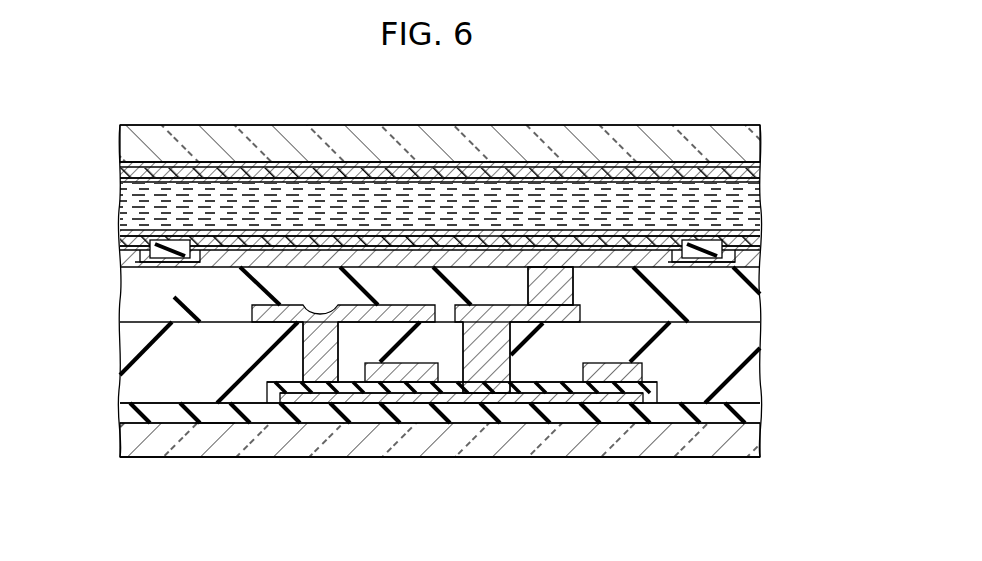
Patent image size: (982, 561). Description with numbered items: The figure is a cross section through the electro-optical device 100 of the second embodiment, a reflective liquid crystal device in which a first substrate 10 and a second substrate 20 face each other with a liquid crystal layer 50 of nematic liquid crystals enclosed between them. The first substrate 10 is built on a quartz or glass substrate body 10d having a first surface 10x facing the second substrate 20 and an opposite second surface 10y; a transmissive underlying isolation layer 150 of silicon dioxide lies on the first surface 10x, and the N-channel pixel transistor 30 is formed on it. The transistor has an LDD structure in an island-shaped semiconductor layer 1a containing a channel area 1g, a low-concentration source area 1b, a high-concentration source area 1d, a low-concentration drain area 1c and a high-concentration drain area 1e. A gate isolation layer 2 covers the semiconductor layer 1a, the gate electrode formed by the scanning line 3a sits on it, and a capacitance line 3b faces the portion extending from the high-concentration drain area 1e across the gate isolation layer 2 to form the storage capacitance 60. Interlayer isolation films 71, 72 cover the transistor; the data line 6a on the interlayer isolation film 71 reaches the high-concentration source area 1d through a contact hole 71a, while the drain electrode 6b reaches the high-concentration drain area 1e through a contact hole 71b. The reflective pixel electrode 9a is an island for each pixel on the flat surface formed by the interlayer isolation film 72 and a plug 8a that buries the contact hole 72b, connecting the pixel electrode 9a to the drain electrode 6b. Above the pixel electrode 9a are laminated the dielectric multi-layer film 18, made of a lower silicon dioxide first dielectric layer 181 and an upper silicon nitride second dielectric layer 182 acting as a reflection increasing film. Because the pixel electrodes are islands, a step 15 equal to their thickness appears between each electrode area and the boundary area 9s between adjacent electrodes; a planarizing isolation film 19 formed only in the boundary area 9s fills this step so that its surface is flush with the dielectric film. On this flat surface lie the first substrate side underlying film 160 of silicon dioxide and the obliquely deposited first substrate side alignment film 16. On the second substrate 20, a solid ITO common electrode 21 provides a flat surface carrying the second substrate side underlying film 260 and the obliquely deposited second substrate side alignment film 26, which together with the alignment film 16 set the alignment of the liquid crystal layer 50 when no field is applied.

The electro-optical device 100 is at (588, 104).
The second substrate 20 is at (102, 125).
The common electrode 21 is at (760, 170).
The second substrate side alignment film 26 is at (660, 172).
The second substrate side underlying film 260 is at (708, 177).
The liquid crystal layer 50 is at (760, 200).
The first substrate side alignment film 16 is at (760, 232).
The first substrate side underlying film 160 is at (760, 238).
The dielectric multi-layer film 18 is at (558, 93).
The first dielectric layer 181 is at (489, 243).
The second dielectric layer 182 is at (542, 243).
The pixel electrode 9a is at (385, 257).
The step 15 is at (170, 240).
The planarizing isolation film 19 is at (175, 247).
The boundary area 9s is at (200, 268).
The first substrate 10 is at (102, 457).
The interlayer isolation film 72 is at (745, 300).
The interlayer isolation film 71 is at (745, 340).
The data line 6a is at (254, 305).
The contact hole 71a is at (305, 350).
The drain electrode 6b is at (581, 316).
The contact hole 71b is at (508, 355).
The plug 8a is at (574, 295).
The contact hole 72b is at (526, 287).
The gate isolation layer 2 is at (421, 364).
The scanning line 3a is at (365, 380).
The capacitance line 3b is at (612, 363).
The semiconductor layer 1a is at (420, 404).
The high-concentration source area 1d is at (303, 405).
The low-concentration source area 1b is at (348, 404).
The channel area 1g is at (402, 404).
The low-concentration drain area 1c is at (455, 404).
The high-concentration drain area 1e is at (500, 404).
The pixel transistor 30 is at (379, 404).
The underlying isolation layer 150 is at (760, 415).
The storage capacitance 60 is at (620, 407).
The first surface 10x is at (215, 415).
The second surface 10y is at (240, 455).
The substrate body 10d is at (760, 443).